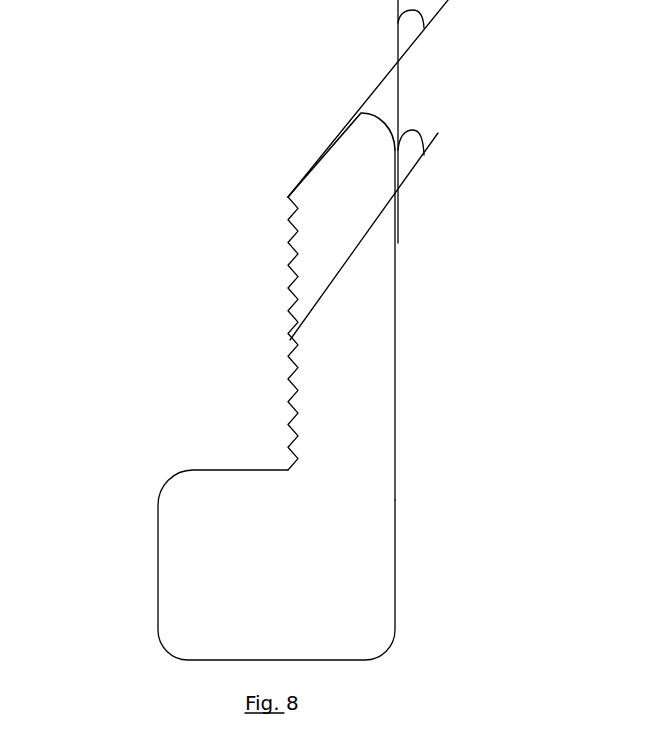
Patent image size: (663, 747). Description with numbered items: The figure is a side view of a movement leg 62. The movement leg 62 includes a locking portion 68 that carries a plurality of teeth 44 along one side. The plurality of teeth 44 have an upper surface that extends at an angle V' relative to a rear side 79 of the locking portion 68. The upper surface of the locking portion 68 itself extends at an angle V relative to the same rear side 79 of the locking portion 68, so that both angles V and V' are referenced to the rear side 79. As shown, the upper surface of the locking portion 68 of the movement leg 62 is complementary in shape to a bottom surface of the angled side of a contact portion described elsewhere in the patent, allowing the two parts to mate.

The teeth 44 is at (290, 345).
The movement leg 62 is at (317, 572).
The locking portion 68 is at (300, 386).
The rear side 79 is at (395, 368).
The angle γ V is at (404, 121).
The angle γ' V' is at (403, 231).